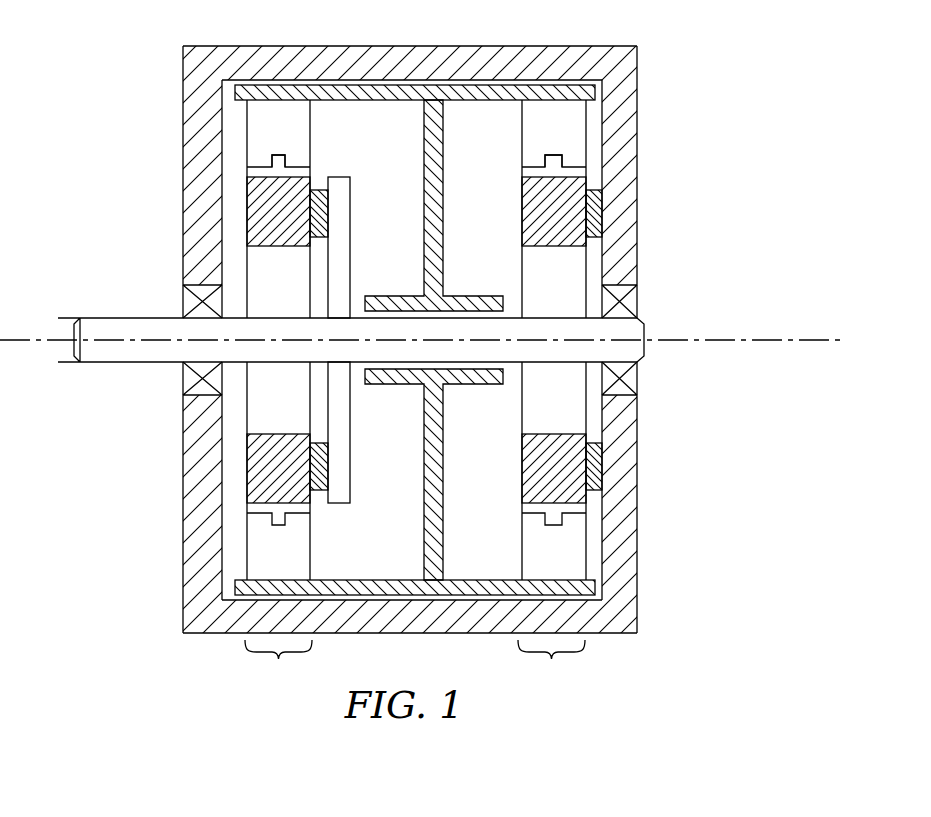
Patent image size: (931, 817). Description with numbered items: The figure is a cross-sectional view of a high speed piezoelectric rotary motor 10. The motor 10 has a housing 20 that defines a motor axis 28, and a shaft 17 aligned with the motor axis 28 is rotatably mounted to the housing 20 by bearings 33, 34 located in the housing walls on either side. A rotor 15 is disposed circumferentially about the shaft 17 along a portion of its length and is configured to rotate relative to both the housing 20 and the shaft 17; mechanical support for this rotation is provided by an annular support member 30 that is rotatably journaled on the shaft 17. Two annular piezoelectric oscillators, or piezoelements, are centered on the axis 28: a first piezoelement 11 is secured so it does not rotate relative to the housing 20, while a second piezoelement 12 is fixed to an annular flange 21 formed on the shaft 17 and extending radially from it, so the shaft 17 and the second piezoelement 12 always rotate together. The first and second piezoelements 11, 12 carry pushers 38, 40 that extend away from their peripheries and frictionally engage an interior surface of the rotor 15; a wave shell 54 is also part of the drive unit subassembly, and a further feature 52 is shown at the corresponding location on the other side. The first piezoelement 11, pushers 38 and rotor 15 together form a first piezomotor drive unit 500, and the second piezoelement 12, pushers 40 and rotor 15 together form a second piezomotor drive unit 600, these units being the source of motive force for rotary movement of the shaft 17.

The high speed piezoelectric rotary motor 10 is at (690, 582).
The first piezoelement 11 is at (525, 222).
The second piezoelement 12 is at (262, 205).
The rotor 15 is at (478, 90).
The shaft 17 is at (630, 320).
The housing 20 is at (228, 52).
The annular flange 21 is at (342, 466).
The motor axis 28 is at (770, 340).
The annular support member 30 is at (443, 178).
The bearing 33 is at (185, 285).
The bearing 34 is at (637, 372).
The pushers 38 is at (522, 127).
The pushers 40 is at (312, 127).
The first stator tooth 52 is at (298, 165).
The wave shell 54 is at (524, 156).
The first piezomotor drive unit 500 is at (551, 665).
The second piezomotor drive unit 600 is at (278, 665).